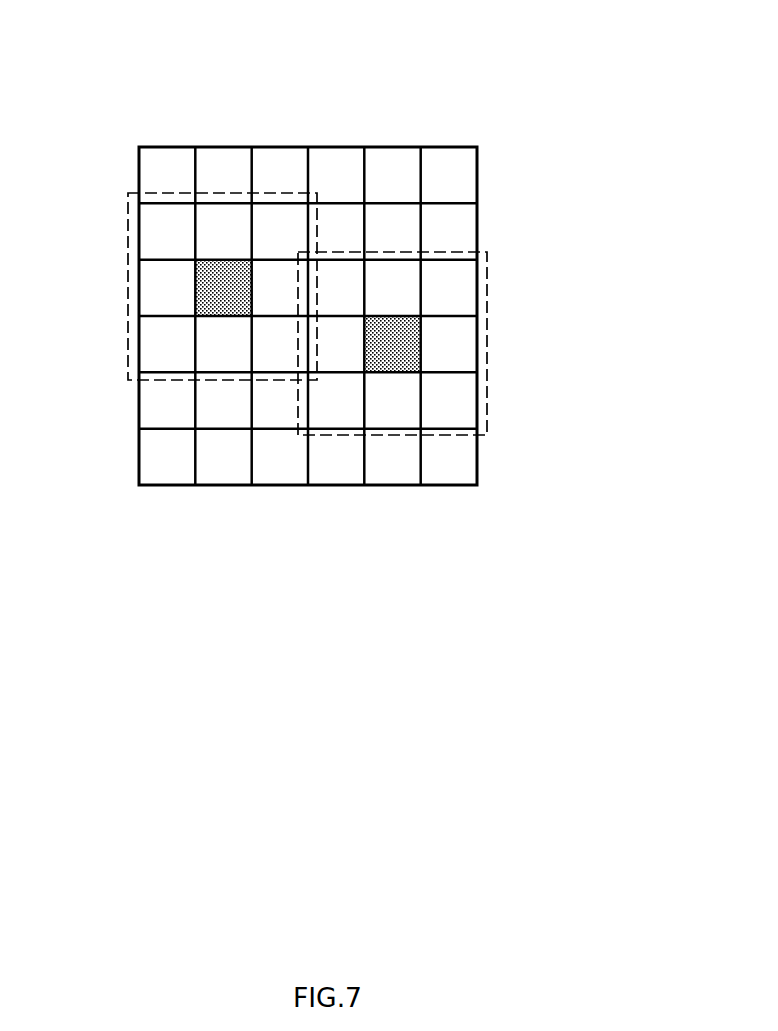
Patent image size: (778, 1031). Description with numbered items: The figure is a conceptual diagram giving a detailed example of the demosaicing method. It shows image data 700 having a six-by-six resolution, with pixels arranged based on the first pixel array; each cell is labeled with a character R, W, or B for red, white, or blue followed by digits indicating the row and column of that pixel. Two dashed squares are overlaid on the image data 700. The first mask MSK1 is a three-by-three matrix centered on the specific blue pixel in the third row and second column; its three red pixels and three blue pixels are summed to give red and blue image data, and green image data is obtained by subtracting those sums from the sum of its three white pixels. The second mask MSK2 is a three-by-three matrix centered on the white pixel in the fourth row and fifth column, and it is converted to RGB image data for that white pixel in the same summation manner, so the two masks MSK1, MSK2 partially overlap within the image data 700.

The image data 700 is at (478, 72).
The first mask MSK1 is at (128, 288).
The second mask MSK2 is at (487, 343).